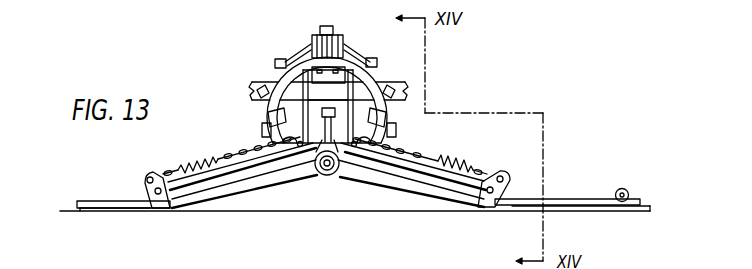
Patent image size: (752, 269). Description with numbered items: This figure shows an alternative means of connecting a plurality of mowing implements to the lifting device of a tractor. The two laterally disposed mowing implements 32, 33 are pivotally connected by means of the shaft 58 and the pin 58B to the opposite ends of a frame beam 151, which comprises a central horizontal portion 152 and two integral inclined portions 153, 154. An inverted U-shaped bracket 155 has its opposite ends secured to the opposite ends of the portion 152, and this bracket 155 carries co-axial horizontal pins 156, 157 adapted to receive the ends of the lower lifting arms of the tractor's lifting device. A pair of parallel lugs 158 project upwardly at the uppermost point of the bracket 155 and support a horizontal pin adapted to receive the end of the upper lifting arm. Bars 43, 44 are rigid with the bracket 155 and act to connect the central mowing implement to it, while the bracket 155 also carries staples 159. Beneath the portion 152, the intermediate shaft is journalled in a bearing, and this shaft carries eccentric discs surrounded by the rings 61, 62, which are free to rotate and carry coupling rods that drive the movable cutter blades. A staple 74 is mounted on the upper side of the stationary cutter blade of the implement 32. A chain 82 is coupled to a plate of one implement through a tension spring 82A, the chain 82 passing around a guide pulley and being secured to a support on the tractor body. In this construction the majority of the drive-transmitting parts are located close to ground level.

The mowing implement 32 is at (560, 198).
The mowing implement 33 is at (100, 199).
The bar 43 is at (388, 112).
The bar 44 is at (266, 110).
The shaft 58 is at (148, 192).
The pin 58B is at (503, 179).
The ring 61 is at (330, 176).
The ring 62 is at (325, 175).
The staple 74 is at (626, 190).
The chain 82 is at (420, 150).
The tension spring 82A is at (458, 160).
The frame beam 151 is at (274, 179).
The central horizontal portion 152 is at (290, 154).
The inclined portion 153 is at (413, 158).
The inclined portion 154 is at (183, 184).
The inverted U-shaped bracket 155 is at (371, 81).
The horizontal pin 156 is at (262, 128).
The horizontal pin 157 is at (397, 127).
The lugs 158 is at (334, 23).
The staples 159 is at (271, 82).